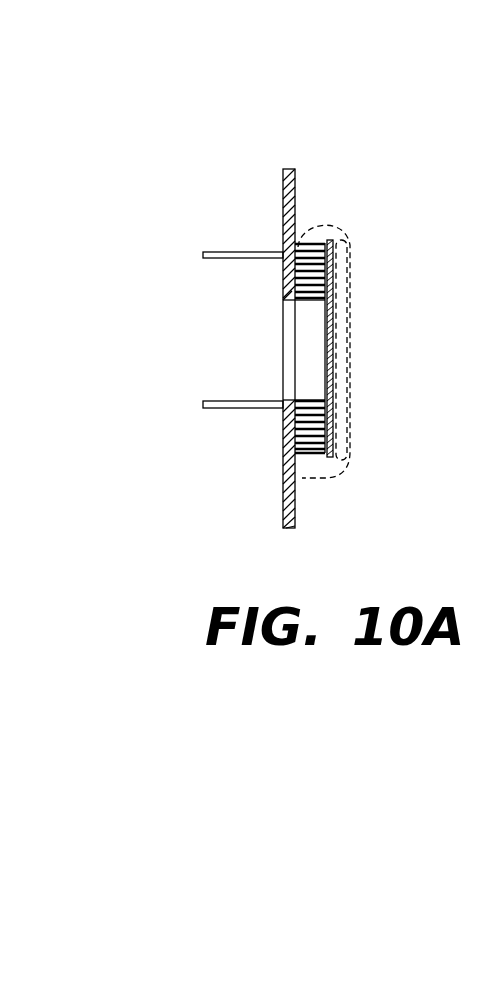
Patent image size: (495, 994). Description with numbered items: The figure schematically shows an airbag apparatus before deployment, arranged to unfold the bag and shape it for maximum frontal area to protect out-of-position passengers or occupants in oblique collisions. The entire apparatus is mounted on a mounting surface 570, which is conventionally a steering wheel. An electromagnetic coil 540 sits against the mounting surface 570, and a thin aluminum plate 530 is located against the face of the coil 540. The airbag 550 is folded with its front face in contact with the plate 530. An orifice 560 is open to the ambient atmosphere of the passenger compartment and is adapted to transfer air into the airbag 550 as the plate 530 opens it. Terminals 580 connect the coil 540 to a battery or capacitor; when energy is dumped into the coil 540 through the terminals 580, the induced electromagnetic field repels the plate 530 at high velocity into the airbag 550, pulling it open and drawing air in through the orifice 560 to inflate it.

The thin aluminum plate 530 is at (330, 240).
The electromagnetic coil 540 is at (313, 243).
The airbag 550 is at (352, 300).
The orifice 560 is at (312, 345).
The mounting surface 570 is at (283, 180).
The terminals 580 is at (245, 252).